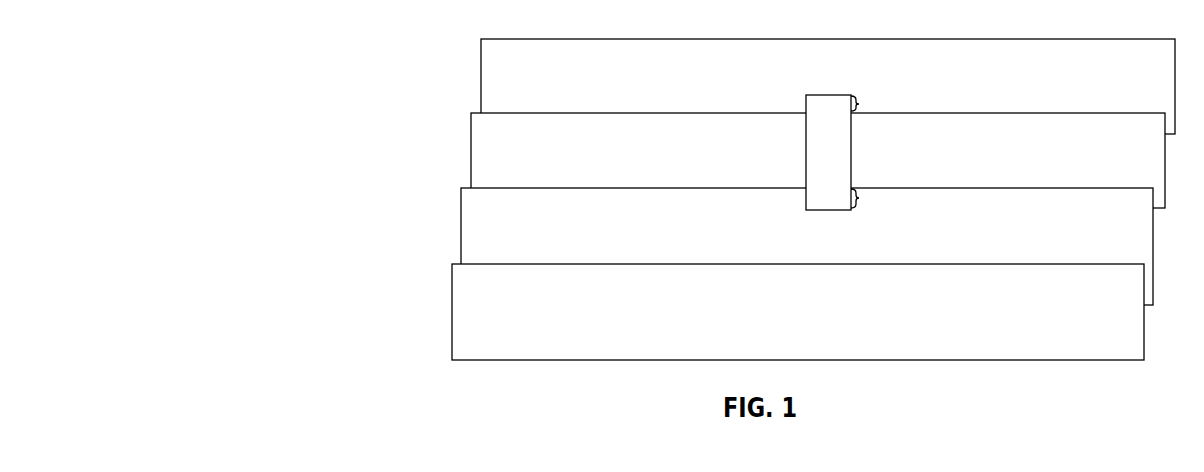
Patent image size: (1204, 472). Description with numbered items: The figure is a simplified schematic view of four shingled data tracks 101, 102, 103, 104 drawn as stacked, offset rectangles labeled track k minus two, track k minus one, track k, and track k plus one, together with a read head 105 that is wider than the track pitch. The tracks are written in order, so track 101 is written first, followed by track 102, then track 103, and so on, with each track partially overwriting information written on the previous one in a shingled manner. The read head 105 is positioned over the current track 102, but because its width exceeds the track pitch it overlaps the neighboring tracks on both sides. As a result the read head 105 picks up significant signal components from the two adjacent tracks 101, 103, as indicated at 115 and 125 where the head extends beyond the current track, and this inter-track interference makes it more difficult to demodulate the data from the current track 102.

The shingled data track 101 is at (481, 78).
The shingled data track 102 is at (471, 153).
The shingled data track 103 is at (461, 228).
The shingled data track 104 is at (452, 313).
The read head 105 is at (806, 152).
The adjacent-track signal component 115 is at (859, 104).
The adjacent-track signal component 125 is at (859, 198).